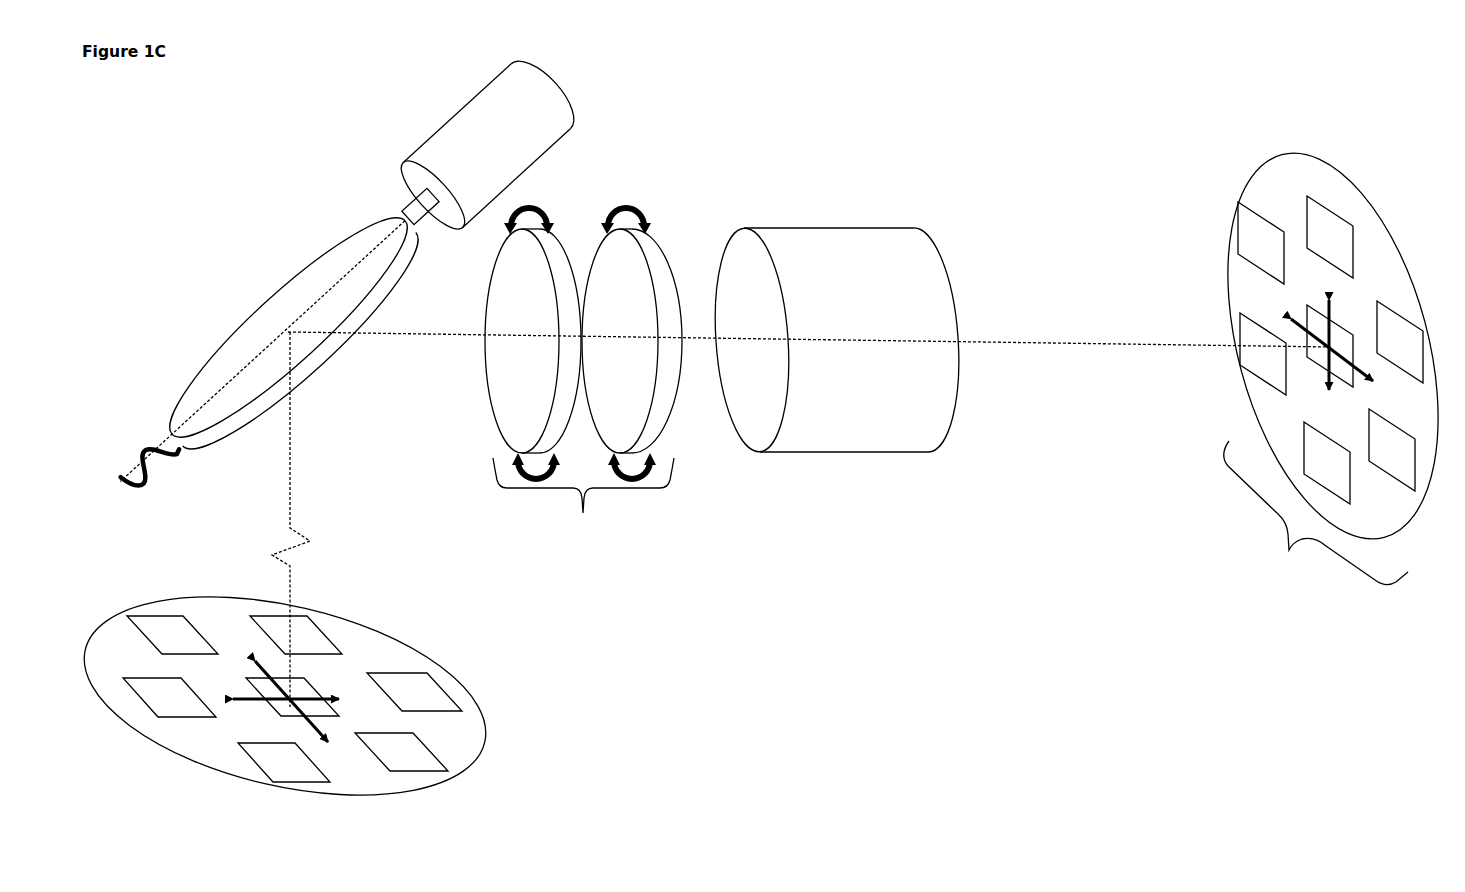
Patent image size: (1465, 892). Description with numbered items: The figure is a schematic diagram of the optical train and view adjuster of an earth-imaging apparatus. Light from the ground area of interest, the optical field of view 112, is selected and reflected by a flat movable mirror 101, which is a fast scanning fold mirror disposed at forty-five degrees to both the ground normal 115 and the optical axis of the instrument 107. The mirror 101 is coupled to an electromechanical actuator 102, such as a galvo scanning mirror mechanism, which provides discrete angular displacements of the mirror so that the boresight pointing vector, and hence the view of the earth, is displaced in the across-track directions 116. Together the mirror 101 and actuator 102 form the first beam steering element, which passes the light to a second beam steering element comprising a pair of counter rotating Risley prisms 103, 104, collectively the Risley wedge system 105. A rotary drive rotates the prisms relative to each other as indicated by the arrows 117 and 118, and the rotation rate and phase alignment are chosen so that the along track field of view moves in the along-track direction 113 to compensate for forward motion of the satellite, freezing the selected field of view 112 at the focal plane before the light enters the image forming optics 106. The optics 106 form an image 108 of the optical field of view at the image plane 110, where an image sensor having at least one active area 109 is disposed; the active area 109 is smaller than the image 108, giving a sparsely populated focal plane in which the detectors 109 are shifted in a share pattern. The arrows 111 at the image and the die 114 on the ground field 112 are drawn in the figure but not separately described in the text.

The flat movable mirror 101 is at (276, 311).
The electromechanical actuator 102 is at (458, 129).
The Risley prism 103 is at (513, 282).
The Risley prism 104 is at (650, 253).
The Risley wedge system 105 is at (583, 494).
The image forming optics 106 is at (816, 250).
The optical axis of the instrument 107 is at (1020, 338).
The image of the optical field of view 108 is at (1283, 156).
The active area 109 is at (1257, 242).
The image plane 110 is at (1316, 513).
The stage translation arrows 111 is at (1339, 311).
The optical field of view 112 is at (422, 653).
The along-track direction 113 is at (306, 691).
The die on second wafer 114 is at (403, 748).
The ground normal 115 is at (297, 492).
The directions of field of view displacement 116 is at (322, 729).
The rotation arrow 117 is at (529, 205).
The rotation arrow 118 is at (633, 204).